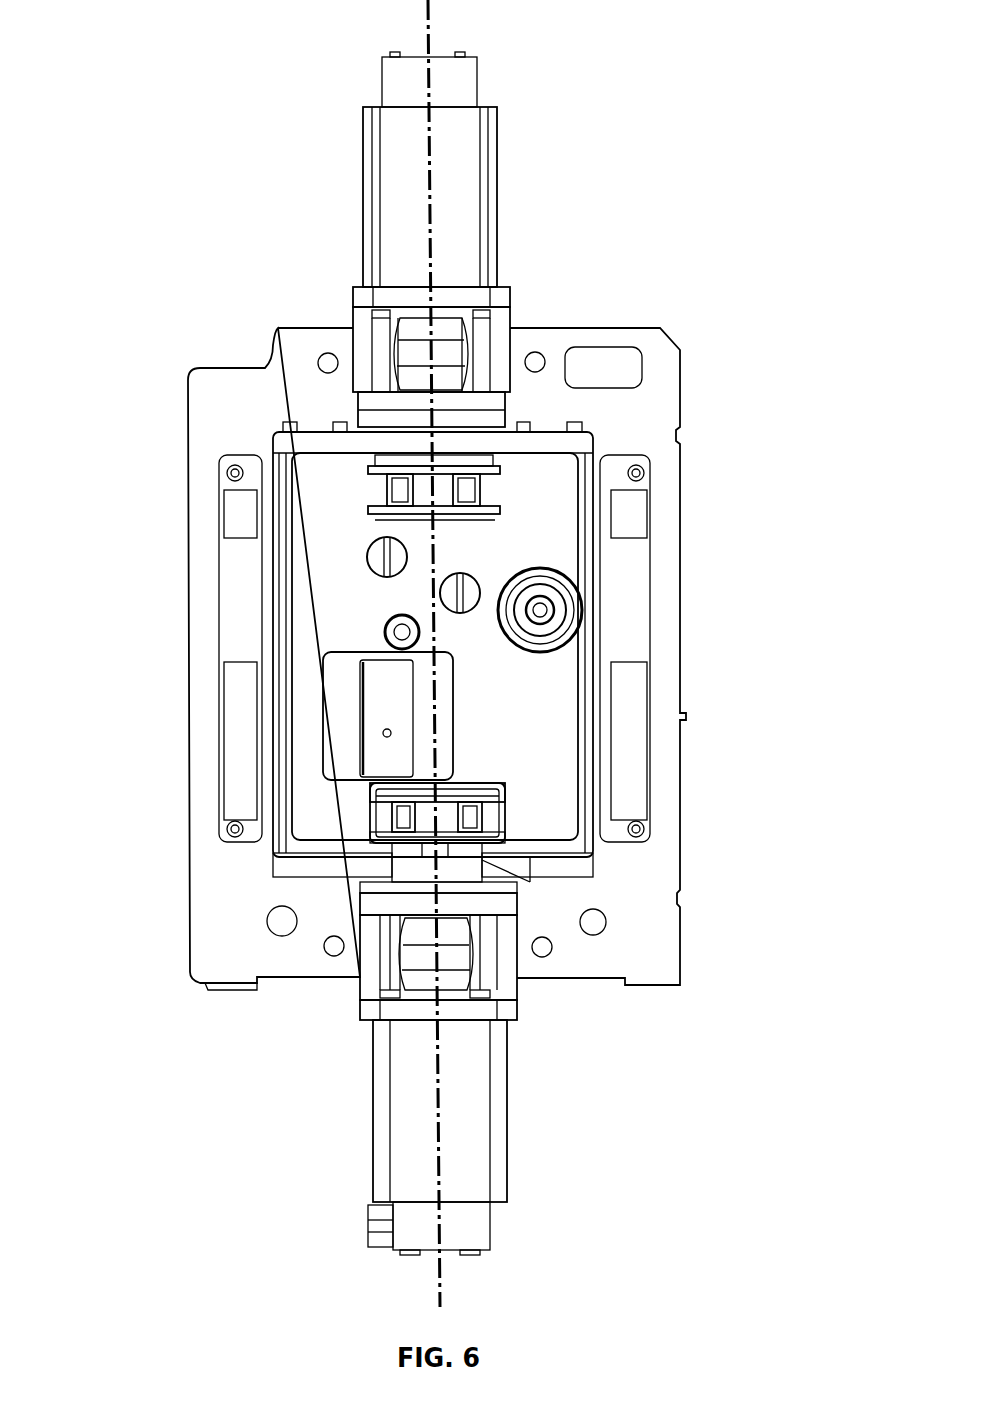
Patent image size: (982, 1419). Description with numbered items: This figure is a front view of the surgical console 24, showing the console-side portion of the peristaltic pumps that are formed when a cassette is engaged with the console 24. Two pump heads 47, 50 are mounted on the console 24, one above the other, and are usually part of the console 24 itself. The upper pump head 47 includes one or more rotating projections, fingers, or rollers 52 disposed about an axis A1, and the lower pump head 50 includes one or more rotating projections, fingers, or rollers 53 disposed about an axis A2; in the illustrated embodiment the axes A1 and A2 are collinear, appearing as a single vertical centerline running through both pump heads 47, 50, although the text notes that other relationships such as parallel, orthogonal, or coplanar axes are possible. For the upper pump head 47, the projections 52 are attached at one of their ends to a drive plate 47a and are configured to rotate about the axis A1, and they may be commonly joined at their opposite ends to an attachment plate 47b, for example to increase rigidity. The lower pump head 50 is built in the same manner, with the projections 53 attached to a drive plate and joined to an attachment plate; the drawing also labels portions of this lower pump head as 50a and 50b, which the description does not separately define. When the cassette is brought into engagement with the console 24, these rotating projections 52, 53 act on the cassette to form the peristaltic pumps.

The console 24 is at (260, 284).
The pump head 47 is at (340, 488).
The drive plate 47a is at (378, 467).
The attachment plate 47b is at (383, 518).
The rotating projections, fingers, or rollers 52 is at (487, 490).
The pump head 50 is at (345, 819).
The lower guide flange 50a is at (515, 875).
The lower guide top bar 50b is at (497, 783).
The rotating projections, fingers, or rollers 53 is at (485, 817).
The axis A1 is at (430, 172).
The axis A2 is at (442, 1090).